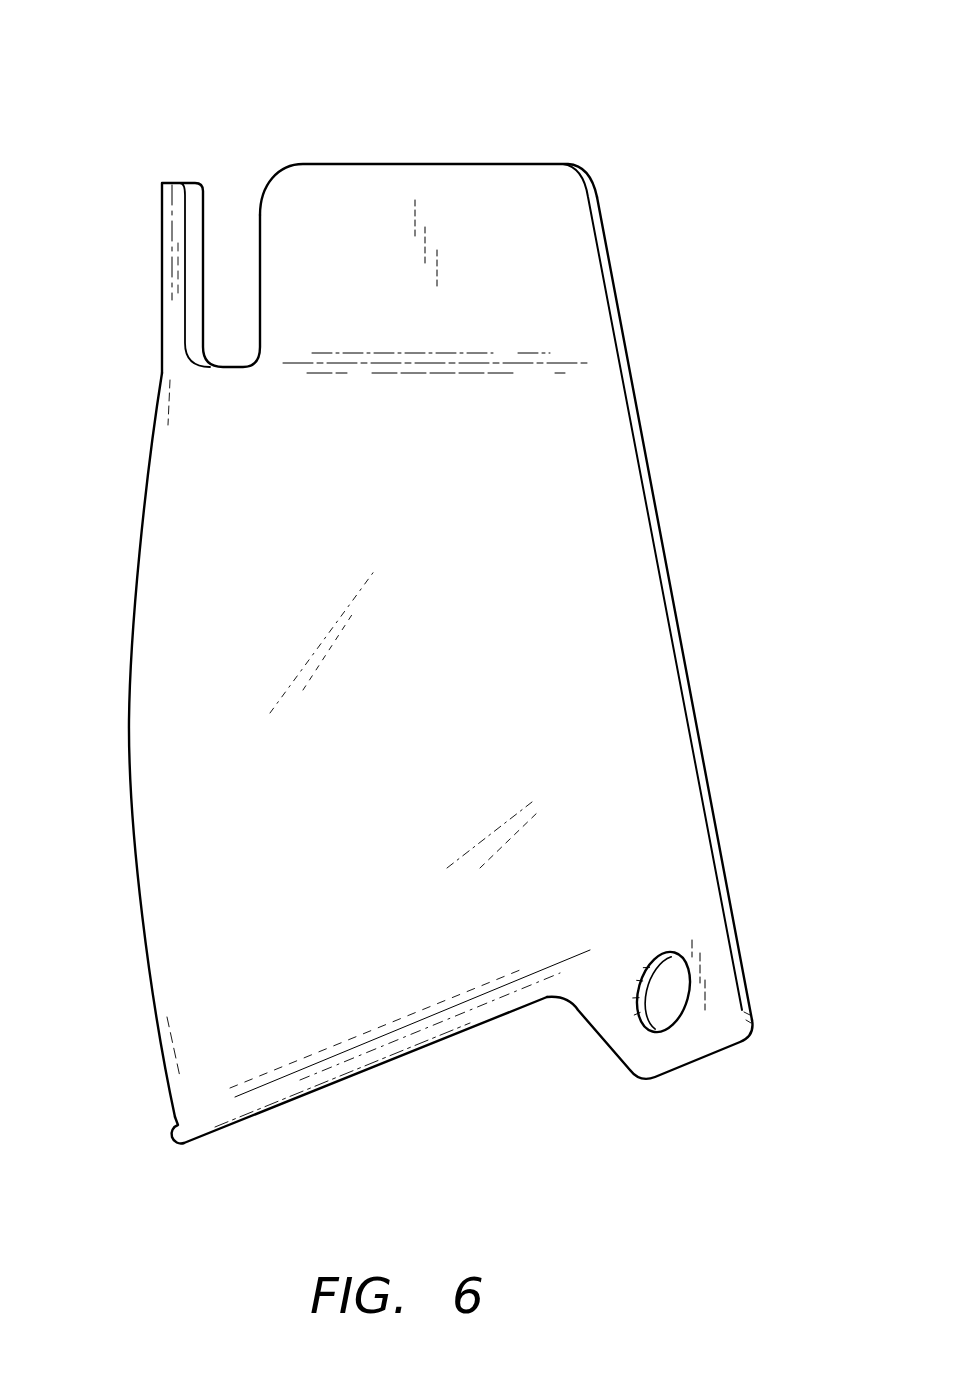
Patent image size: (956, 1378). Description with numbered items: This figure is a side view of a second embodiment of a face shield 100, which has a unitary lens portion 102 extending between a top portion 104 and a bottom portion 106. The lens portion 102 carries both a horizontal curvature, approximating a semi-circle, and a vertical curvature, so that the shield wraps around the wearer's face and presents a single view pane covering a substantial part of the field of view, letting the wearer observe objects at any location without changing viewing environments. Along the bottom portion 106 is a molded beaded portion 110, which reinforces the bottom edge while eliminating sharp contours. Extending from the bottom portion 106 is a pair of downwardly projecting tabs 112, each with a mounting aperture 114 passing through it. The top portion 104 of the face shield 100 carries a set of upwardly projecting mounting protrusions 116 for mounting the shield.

The face shield 100 is at (674, 58).
The lens portion 102 is at (337, 891).
The top portion 104 is at (157, 406).
The bottom portion 106 is at (162, 1045).
The molded beaded portion 110 is at (185, 1130).
The downwardly projecting tabs 112 is at (727, 1023).
The mounting aperture 114 is at (663, 1002).
The mounting protrusions 116 is at (432, 192).